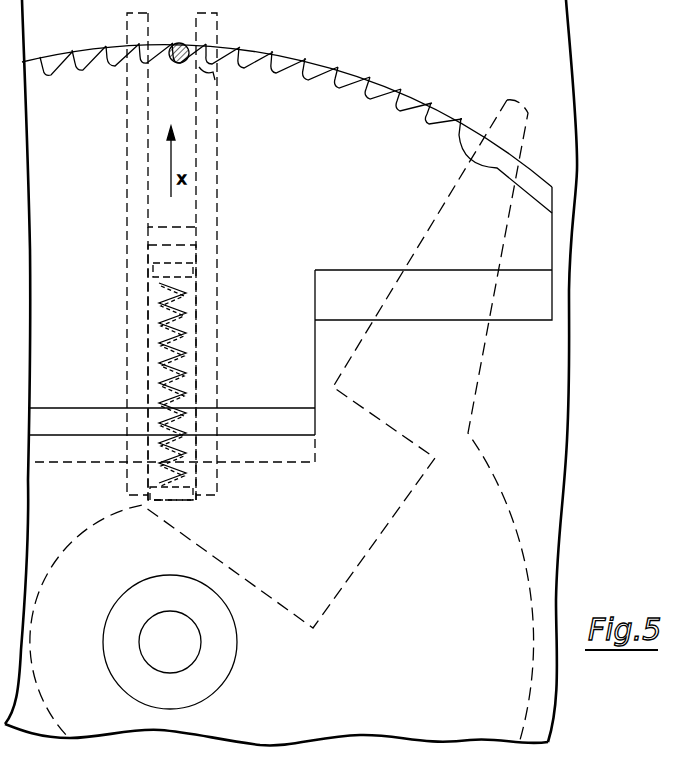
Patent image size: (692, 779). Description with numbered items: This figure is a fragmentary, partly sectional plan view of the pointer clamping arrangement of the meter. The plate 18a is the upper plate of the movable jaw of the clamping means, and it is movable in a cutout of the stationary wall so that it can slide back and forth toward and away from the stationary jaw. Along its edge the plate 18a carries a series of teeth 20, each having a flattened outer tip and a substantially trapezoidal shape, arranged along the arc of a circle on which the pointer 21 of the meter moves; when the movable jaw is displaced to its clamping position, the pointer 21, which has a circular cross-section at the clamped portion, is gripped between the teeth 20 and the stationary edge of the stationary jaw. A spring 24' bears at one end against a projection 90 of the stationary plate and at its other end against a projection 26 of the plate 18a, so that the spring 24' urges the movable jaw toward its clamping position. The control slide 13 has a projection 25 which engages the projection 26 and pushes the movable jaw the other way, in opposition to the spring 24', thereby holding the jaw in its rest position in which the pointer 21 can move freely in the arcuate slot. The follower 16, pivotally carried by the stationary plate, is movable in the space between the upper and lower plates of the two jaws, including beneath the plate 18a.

The control slide 13 is at (228, 125).
The follower 16 is at (477, 393).
The plate of the movable jaw 18a is at (538, 243).
The teeth 20 is at (297, 72).
The pointer 21 is at (182, 44).
The spring 24' is at (134, 384).
The projection of the control slide 25 is at (168, 240).
The projection of the movable jaw plate 26 is at (153, 270).
The projection of the stationary plate 90 is at (200, 500).